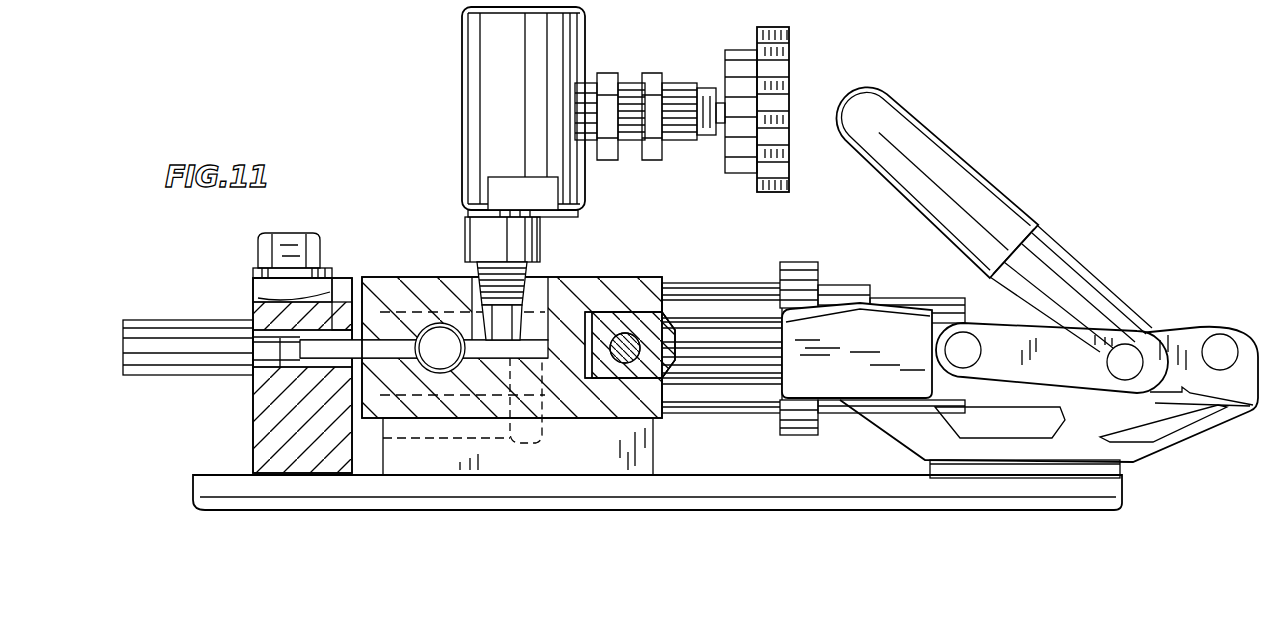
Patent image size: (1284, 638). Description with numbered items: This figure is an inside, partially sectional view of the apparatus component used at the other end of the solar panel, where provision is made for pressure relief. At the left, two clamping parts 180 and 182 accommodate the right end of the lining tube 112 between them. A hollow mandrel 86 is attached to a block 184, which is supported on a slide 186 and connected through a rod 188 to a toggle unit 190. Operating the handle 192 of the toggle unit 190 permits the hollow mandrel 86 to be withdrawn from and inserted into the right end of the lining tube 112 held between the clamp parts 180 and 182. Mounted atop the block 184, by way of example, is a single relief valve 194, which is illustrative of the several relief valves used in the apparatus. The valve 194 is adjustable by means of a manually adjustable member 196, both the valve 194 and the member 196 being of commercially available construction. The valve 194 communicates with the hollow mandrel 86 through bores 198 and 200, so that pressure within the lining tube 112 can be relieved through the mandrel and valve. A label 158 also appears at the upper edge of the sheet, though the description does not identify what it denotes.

The hollow mandrel 86 is at (340, 292).
The lining tube 112 is at (246, 378).
The section label 158 is at (932, 0).
The clamping part 180 is at (253, 298).
The clamping part 182 is at (253, 436).
The block 184 is at (615, 250).
The slide 186 is at (653, 462).
The rod 188 is at (713, 332).
The toggle unit 190 is at (1064, 254).
The handle 192 is at (943, 160).
The relief valve 194 is at (463, 97).
The manually adjustable member 196 is at (778, 27).
The bore 198 is at (527, 292).
The bore 200 is at (521, 442).